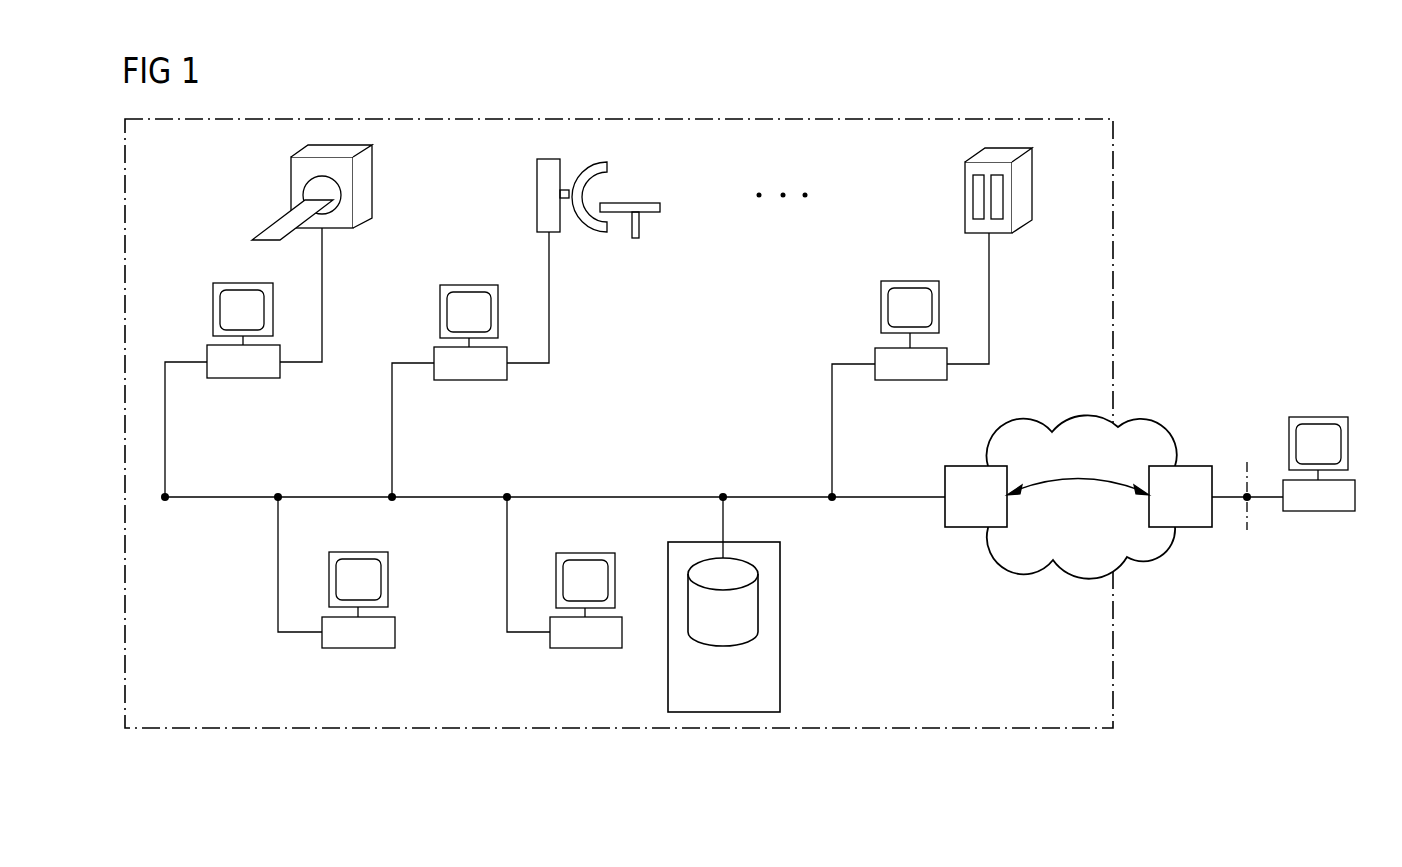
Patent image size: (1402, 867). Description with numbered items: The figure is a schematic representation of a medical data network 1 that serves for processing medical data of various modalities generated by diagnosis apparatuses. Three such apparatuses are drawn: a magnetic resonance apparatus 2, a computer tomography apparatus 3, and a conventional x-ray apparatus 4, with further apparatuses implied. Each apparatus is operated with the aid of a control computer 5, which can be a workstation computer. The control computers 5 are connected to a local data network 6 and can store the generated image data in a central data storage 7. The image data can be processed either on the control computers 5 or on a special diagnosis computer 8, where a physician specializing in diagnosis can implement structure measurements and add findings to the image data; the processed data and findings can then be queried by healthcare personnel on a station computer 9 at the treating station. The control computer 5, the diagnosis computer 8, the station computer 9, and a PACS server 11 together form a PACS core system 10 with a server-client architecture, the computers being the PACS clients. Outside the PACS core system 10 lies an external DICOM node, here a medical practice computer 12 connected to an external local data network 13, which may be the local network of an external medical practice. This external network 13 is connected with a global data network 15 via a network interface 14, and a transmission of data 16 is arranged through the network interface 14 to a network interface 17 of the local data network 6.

The medical data network 1 is at (1177, 183).
The magnetic resonance apparatus 2 is at (291, 179).
The computer tomography apparatus 3 is at (537, 189).
The conventional x-ray apparatus 4 is at (965, 196).
The control computer 5 is at (243, 378).
The local data network 6 is at (615, 495).
The central data storage 7 is at (723, 648).
The diagnosis computer 8 is at (585, 648).
The station computer 9 is at (358, 648).
The PACS core system 10 is at (862, 126).
The PACS server 11 is at (780, 618).
The medical practice computer 12 is at (1320, 511).
The external local data network 13 is at (1248, 470).
The network interface 14 is at (1193, 527).
The global data network 15 is at (1163, 432).
The data transmission link 16 is at (1078, 482).
The network interface 17 is at (963, 527).